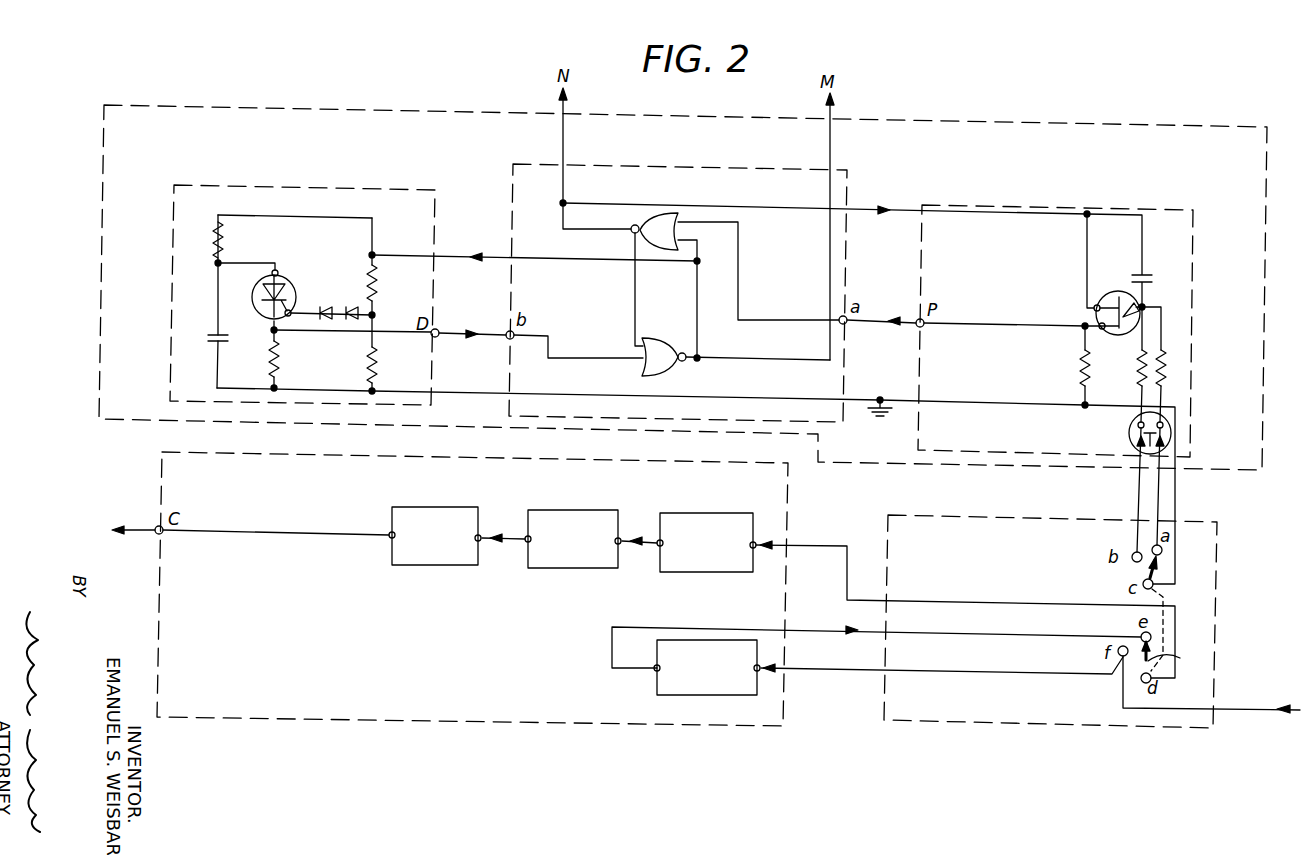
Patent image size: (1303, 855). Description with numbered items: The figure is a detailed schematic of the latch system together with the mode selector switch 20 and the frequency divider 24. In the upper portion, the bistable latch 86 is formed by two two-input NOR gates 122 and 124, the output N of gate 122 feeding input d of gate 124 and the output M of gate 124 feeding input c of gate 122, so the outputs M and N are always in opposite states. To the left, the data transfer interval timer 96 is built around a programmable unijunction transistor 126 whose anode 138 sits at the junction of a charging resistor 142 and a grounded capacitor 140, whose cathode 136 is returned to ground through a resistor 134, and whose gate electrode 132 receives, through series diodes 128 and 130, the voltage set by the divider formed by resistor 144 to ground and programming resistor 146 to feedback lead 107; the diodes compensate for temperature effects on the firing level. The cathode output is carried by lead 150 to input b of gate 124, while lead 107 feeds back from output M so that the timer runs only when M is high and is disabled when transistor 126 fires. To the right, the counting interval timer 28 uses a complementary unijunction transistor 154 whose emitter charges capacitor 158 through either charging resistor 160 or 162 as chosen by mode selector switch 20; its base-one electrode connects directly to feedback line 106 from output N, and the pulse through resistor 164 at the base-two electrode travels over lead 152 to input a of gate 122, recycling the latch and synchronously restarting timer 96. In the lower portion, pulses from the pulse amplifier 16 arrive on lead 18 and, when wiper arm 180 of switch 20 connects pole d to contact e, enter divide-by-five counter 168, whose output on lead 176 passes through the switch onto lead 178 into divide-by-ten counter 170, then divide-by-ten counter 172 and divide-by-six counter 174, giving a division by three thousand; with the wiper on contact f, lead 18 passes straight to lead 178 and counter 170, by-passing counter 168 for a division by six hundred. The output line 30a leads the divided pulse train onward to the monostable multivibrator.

The data transfer interval timer 96 is at (458, 176).
The bistable latch 86 is at (795, 165).
The counting interval timer 28 is at (1250, 189).
The frequency divider 24 is at (482, 457).
The mode selector switch 20 is at (1130, 506).
The charging resistor 142 is at (224, 236).
The cathode 136 is at (226, 265).
The anode 138 is at (278, 271).
The gate electrode 132 is at (291, 311).
The programmable unijunction transistor 126 is at (262, 312).
The capacitor 140 is at (208, 340).
The diode 128 is at (322, 320).
The diode 130 is at (352, 322).
The resistor 134 is at (278, 361).
The resistor 144 is at (378, 360).
The programming resistor 146 is at (378, 283).
The feedback lead 107 is at (460, 255).
The lead 150 is at (459, 330).
The feedback line 106 is at (899, 208).
The NOR gate 122 is at (634, 226).
The NOR gate 124 is at (664, 346).
The complementary unijunction transistor 154 is at (1106, 296).
The charging capacitor 158 is at (1166, 272).
The lead 152 is at (1003, 328).
The resistor 164 is at (1081, 358).
The charging resistor 160 is at (1139, 366).
The charging resistor 162 is at (1164, 366).
The divide-by-6 counter 174 is at (471, 570).
The divide-by-10 counter 172 is at (588, 570).
The divide-by-10 counter 170 is at (710, 574).
The divide-by-5 counter 168 is at (732, 697).
The lead 178 is at (1010, 598).
The lead 176 is at (984, 636).
The lead 18 is at (968, 673).
The wiper arm 180 is at (1180, 636).
The output line 30a is at (113, 531).
The pulse amplifier 16 is at (1269, 739).